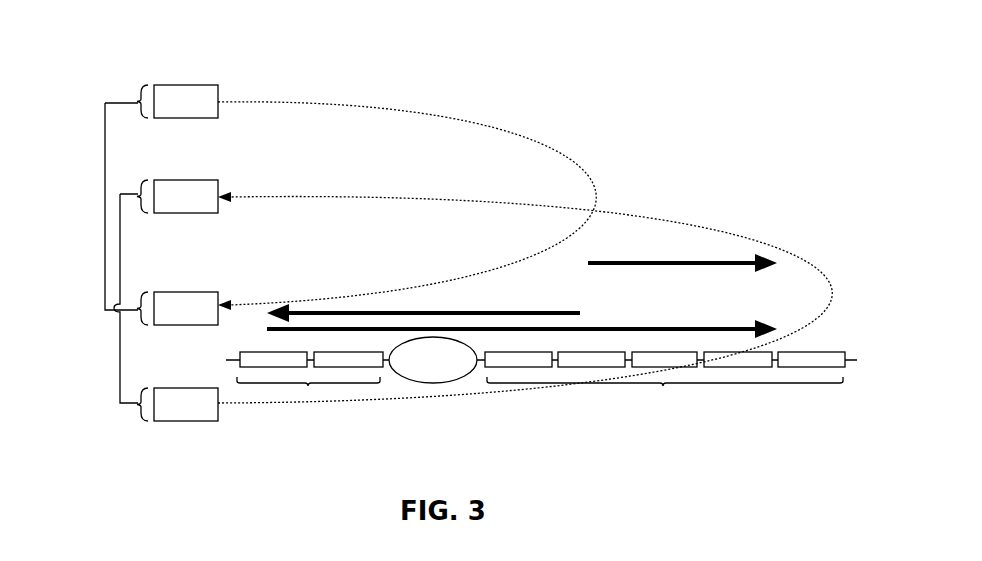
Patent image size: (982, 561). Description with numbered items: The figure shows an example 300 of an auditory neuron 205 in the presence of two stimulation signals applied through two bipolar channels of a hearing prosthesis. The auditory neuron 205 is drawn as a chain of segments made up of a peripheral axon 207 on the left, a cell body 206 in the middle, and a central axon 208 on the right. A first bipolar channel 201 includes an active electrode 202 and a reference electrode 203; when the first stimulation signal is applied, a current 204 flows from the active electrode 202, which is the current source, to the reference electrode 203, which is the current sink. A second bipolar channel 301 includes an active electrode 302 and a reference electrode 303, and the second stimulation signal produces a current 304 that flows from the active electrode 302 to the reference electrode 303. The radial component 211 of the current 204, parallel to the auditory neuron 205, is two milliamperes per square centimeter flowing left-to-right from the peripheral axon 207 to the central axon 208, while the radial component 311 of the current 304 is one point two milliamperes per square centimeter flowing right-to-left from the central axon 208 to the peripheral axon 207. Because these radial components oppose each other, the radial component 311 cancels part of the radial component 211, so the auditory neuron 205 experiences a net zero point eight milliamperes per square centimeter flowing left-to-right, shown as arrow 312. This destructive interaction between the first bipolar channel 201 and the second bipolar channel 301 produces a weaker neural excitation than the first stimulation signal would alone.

The example 300 is at (602, 112).
The second bipolar channel 301 is at (106, 103).
The first bipolar channel 201 is at (128, 403).
The active electrode 302 is at (182, 85).
The reference electrode 203 is at (182, 180).
The reference electrode 303 is at (182, 292).
The active electrode 202 is at (182, 388).
The current 304 is at (467, 123).
The current 204 is at (805, 260).
The arrow 312 is at (740, 263).
The radial component 311 is at (570, 313).
The radial component 211 is at (610, 329).
The auditory neuron 205 is at (558, 377).
The peripheral axon 207 is at (308, 386).
The cell body 206 is at (433, 383).
The central axon 208 is at (663, 386).